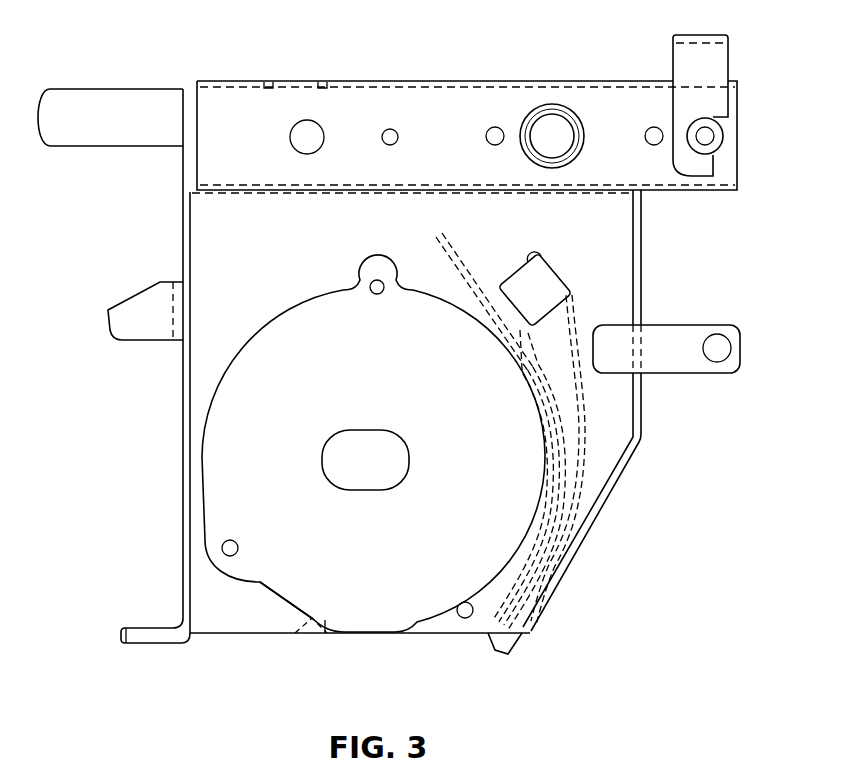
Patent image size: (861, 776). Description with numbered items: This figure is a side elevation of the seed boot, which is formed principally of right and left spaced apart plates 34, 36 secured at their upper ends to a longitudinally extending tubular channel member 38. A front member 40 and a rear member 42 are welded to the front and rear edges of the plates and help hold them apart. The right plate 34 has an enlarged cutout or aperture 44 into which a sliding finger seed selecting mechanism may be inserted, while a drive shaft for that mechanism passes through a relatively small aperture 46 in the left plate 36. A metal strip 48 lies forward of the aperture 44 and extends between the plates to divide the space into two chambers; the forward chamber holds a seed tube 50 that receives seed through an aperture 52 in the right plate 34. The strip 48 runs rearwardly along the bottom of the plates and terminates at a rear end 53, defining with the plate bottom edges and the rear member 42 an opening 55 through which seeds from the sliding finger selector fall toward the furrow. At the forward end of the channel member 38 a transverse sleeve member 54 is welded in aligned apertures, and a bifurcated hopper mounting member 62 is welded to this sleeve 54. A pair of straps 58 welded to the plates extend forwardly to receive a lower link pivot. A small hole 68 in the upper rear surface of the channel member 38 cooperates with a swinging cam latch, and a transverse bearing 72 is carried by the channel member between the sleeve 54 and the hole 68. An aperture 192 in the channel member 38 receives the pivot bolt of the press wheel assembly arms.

The right plate 34 is at (260, 592).
The left plate 36 is at (295, 398).
The tubular member 38 is at (452, 95).
The front member 40 is at (643, 388).
The rear member 42 is at (185, 388).
The aperture 44 is at (281, 315).
The aperture 46 is at (366, 430).
The metal strip 48 is at (448, 242).
The seed tube 50 is at (588, 433).
The aperture 52 is at (547, 262).
The rear end 53 is at (309, 630).
The sleeve member 54 is at (716, 137).
The opening 55 is at (232, 650).
The straps 58 is at (685, 336).
The hopper mounting member 62 is at (743, 50).
The hole 68 is at (320, 83).
The bearing 72 is at (579, 121).
The aperture 192 is at (322, 127).